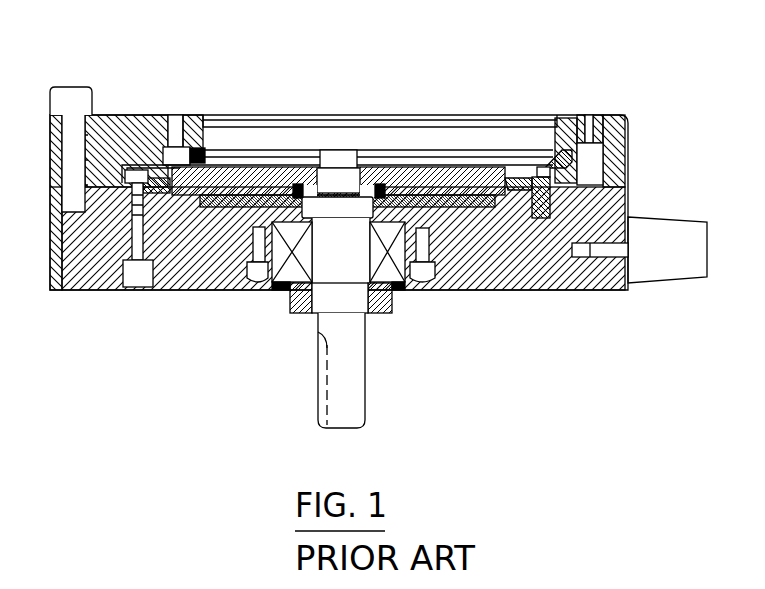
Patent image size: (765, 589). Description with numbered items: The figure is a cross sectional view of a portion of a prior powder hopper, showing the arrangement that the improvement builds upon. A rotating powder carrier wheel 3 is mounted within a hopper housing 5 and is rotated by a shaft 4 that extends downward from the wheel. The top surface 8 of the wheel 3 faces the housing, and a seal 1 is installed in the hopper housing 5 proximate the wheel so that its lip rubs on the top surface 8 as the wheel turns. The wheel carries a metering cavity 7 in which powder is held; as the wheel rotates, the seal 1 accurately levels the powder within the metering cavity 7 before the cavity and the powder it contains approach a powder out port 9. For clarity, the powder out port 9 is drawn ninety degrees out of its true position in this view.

The seal 1 is at (207, 138).
The powder carrier wheel 3 is at (451, 177).
The shaft 4 is at (348, 366).
The hopper housing 5 is at (182, 115).
The metering cavity 7 is at (547, 167).
The top surface of the wheel 8 is at (298, 163).
The powder out port 9 is at (138, 290).